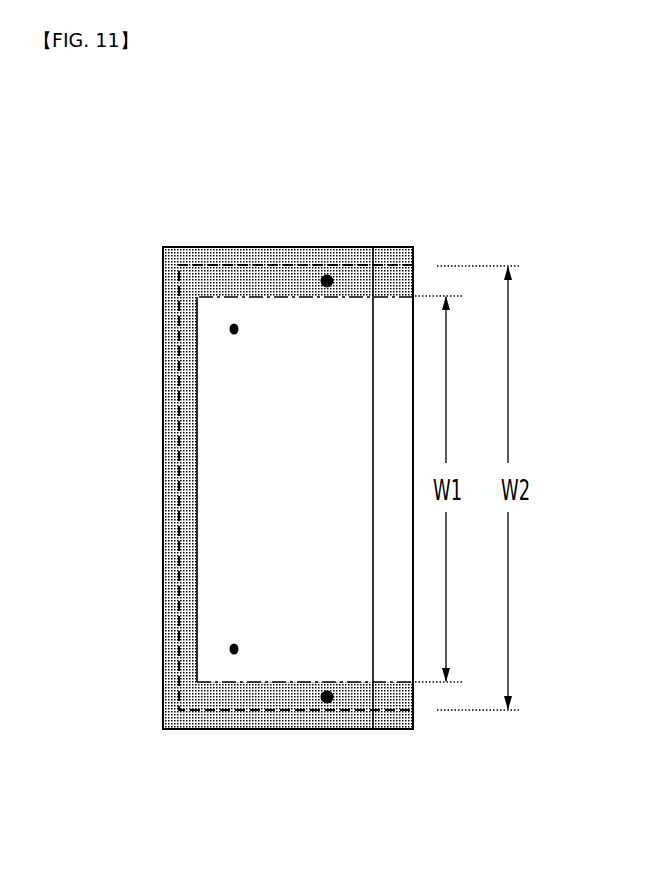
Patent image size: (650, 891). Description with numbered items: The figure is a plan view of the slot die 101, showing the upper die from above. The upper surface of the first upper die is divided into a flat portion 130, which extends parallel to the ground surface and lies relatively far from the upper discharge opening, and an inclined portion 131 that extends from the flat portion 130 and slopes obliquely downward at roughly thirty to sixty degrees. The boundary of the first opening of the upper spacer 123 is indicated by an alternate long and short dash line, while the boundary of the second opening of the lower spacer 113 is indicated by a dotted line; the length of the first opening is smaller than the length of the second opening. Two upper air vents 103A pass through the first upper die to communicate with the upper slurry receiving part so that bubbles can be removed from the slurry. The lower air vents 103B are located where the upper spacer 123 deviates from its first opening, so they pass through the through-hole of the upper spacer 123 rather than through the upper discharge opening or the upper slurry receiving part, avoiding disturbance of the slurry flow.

The slot die 101 is at (144, 217).
The lower spacer 113 is at (170, 293).
The upper spacer 123 is at (236, 275).
The flat portion 130 is at (345, 320).
The inclined portion 131 is at (393, 312).
The upper air vent 103A is at (234, 329).
The lower air vent 103B is at (327, 281).